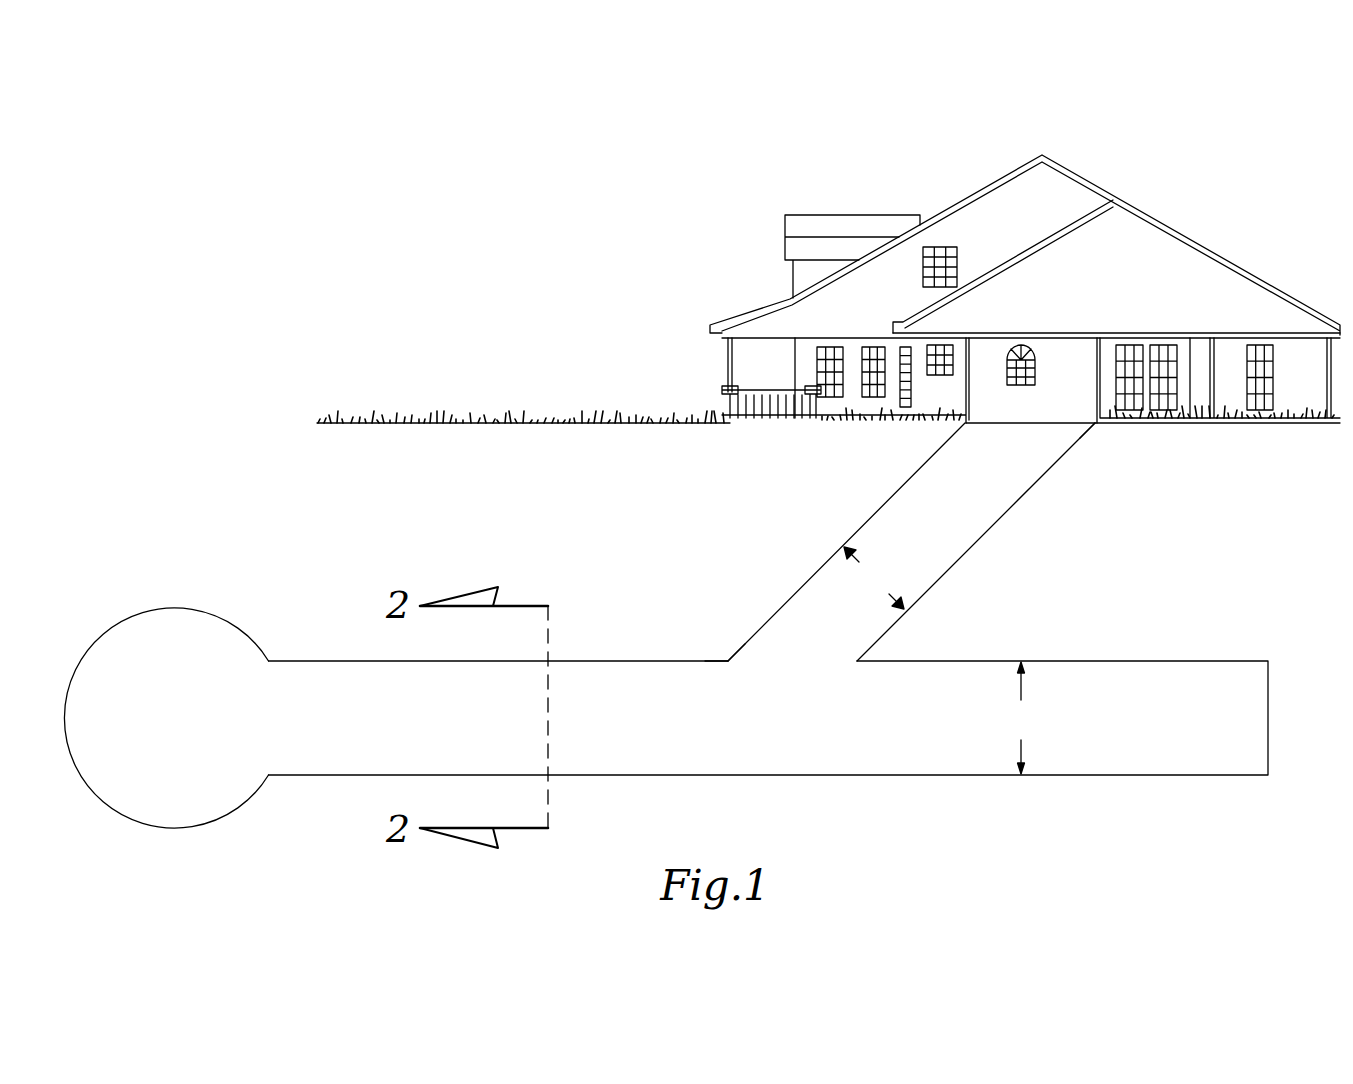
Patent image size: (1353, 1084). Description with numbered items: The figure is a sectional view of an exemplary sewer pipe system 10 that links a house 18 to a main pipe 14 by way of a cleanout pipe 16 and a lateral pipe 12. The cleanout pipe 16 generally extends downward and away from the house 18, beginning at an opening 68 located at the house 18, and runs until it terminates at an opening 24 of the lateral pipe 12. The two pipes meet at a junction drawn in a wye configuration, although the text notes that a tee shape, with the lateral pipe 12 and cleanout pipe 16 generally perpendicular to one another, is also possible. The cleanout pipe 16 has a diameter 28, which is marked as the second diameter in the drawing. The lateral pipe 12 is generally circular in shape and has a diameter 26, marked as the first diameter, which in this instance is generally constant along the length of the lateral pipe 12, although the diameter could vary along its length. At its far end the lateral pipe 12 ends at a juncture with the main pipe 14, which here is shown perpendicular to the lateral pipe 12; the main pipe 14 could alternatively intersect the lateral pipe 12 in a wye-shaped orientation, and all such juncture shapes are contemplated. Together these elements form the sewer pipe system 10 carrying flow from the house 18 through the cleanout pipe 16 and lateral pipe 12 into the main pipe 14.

The sewer pipe system 10 is at (666, 476).
The lateral pipe 12 is at (498, 661).
The main pipe 14 is at (232, 623).
The cleanout pipe 16 is at (978, 540).
The house 18 is at (1185, 237).
The opening of the lateral pipe 24 is at (729, 663).
The diameter of the lateral pipe 26 is at (1037, 718).
The diameter of the cleanout pipe 28 is at (866, 594).
The opening of the cleanout pipe at the house 68 is at (1093, 422).